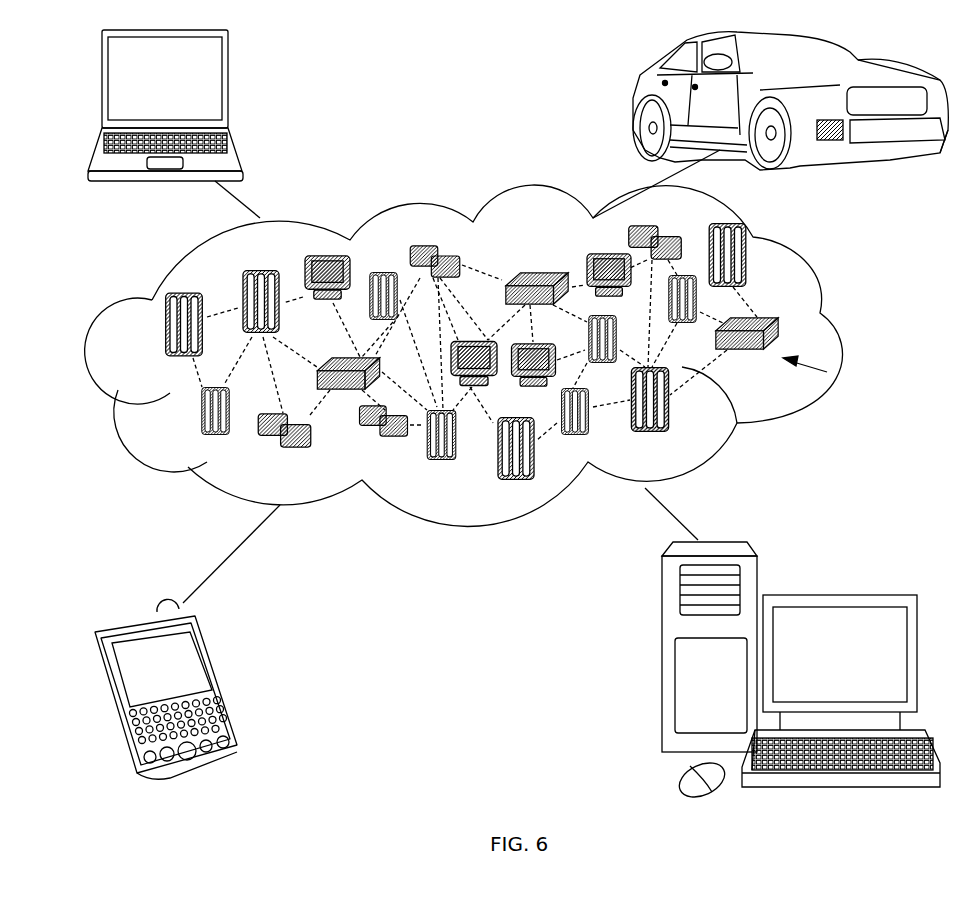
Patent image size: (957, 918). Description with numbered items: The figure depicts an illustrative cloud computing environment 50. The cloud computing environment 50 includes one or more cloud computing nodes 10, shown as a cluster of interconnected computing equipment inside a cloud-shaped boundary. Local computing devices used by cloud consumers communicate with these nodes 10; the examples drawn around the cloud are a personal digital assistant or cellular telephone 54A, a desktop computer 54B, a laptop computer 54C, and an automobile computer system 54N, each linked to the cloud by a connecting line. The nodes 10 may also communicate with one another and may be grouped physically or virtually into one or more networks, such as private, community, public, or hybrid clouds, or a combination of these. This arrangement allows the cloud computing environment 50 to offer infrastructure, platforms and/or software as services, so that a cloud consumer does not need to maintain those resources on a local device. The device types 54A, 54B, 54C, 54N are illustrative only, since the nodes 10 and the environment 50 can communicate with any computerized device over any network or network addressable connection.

The personal digital assistant (PDA) or cellular telephone 54A is at (222, 686).
The desktop computer 54B is at (838, 596).
The laptop computer 54C is at (231, 86).
The automobile computer system 54N is at (633, 100).
The cloud computing environment 50 is at (838, 336).
The cloud computing node 10 is at (812, 372).